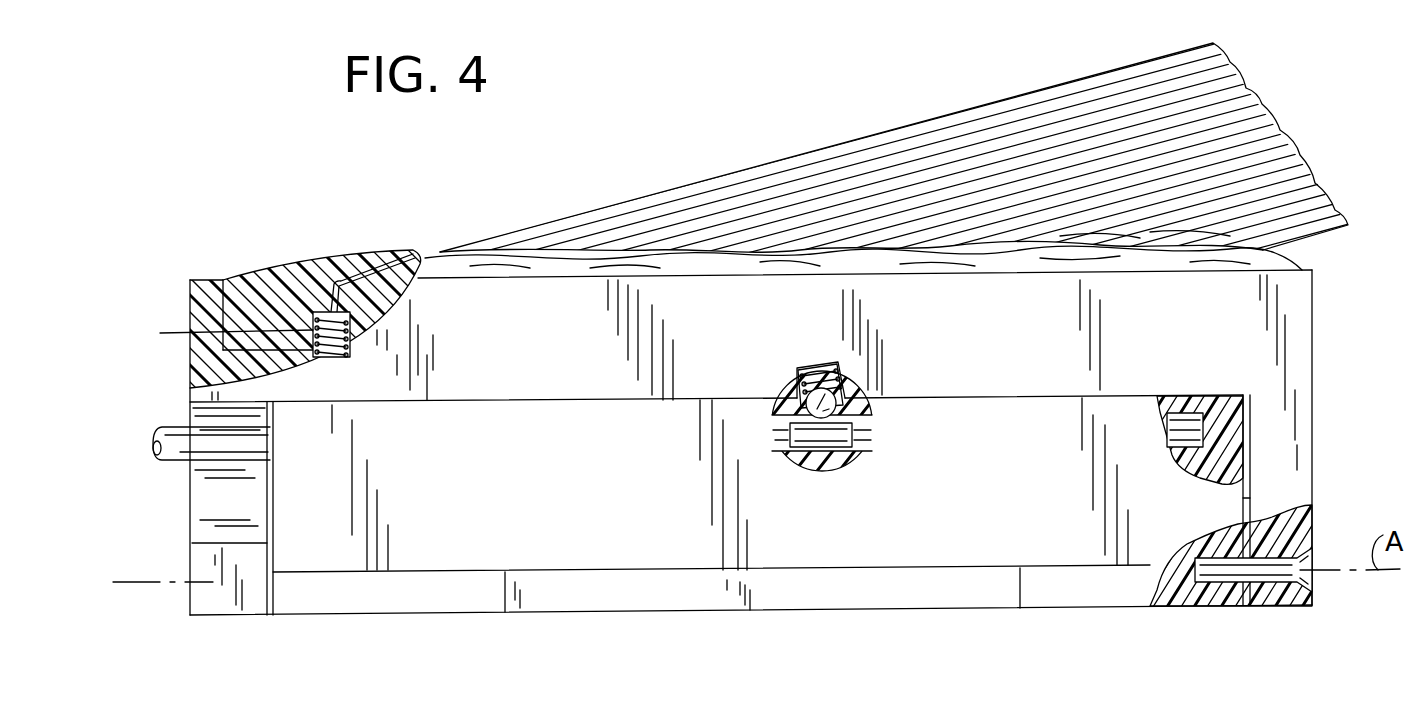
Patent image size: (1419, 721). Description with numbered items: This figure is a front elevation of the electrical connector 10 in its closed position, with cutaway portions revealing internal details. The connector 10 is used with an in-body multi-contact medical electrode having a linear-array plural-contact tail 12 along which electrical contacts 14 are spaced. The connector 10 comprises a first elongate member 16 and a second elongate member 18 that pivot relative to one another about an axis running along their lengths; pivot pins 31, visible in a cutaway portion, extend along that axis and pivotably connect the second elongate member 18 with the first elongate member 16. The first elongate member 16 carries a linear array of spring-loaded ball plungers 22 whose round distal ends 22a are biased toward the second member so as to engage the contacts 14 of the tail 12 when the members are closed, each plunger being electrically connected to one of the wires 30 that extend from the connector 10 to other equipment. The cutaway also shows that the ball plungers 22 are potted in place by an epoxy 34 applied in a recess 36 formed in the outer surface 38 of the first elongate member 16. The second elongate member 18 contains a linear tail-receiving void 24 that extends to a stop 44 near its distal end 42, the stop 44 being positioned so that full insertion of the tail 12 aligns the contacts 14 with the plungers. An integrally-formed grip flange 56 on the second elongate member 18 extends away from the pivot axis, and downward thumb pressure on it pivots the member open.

The electrical connector 10 is at (1338, 322).
The linear-array plural-contact tail 12 is at (177, 427).
The electrical contacts 14 is at (818, 470).
The first elongate member 16 is at (1302, 462).
The second elongate member 18 is at (908, 530).
The spring-loaded ball plungers 22 is at (816, 366).
The round distal ends 22a is at (843, 385).
The linear tail-receiving void 24 is at (1202, 433).
The wires 30 is at (625, 212).
The pivot pins 31 is at (1280, 605).
The epoxy 34 is at (373, 260).
The recess 36 is at (247, 303).
The outer surface 38 is at (211, 280).
The distal end 42 is at (1243, 498).
The stop 44 is at (1190, 413).
The grip flange 56 is at (662, 603).